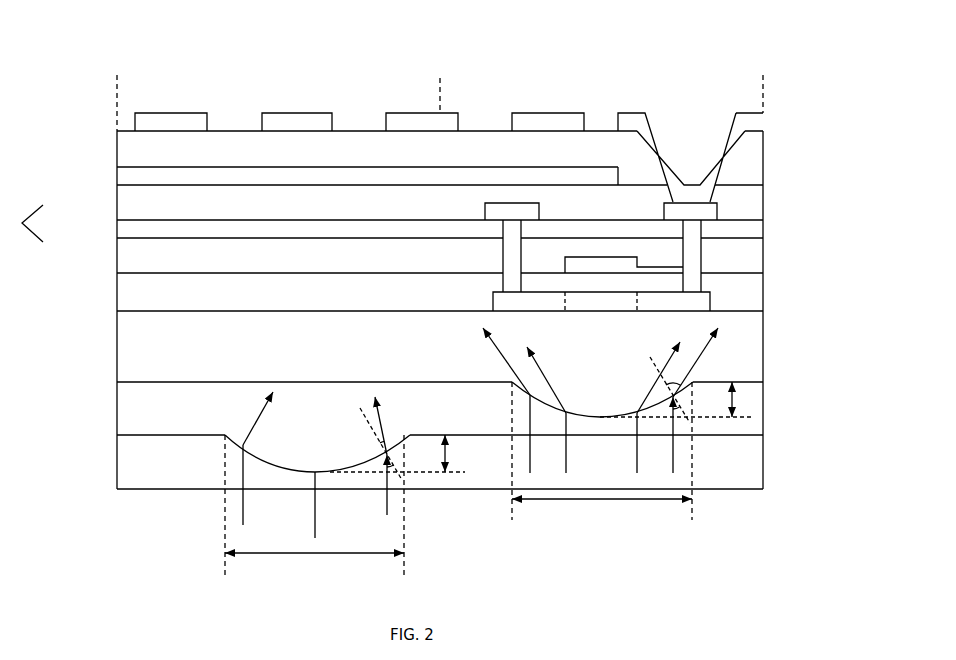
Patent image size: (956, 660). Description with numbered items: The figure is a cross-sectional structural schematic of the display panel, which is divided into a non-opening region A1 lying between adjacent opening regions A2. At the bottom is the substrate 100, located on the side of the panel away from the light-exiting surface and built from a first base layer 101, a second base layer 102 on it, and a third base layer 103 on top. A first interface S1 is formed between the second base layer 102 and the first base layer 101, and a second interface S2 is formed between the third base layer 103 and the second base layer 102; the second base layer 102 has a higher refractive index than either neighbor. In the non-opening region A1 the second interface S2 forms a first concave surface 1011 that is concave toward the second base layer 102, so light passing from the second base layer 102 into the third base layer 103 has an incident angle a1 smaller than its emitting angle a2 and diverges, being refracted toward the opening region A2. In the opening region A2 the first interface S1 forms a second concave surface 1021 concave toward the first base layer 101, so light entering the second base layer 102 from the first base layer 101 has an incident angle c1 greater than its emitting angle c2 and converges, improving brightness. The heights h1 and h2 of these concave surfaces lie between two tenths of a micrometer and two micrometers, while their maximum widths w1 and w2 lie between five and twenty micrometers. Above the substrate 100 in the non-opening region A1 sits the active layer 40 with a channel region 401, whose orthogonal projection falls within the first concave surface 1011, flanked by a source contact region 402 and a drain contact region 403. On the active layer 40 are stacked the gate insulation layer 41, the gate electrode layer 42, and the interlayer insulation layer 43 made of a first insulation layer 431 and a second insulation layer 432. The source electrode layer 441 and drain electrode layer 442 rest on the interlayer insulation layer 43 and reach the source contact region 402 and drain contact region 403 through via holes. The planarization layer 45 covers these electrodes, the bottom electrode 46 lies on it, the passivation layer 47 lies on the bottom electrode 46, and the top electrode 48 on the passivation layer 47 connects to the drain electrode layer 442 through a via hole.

The substrate 100 is at (856, 333).
The first base layer 101 is at (763, 457).
The second base layer 102 is at (763, 410).
The third base layer 103 is at (763, 363).
The first concave surface 1011 is at (600, 417).
The second concave surface 1021 is at (263, 462).
The first interface S1 is at (117, 435).
The second interface S2 is at (117, 382).
The active layer 40 is at (710, 303).
The channel region 401 is at (610, 305).
The source contact region 402 is at (540, 305).
The drain contact region 403 is at (668, 305).
The gate insulation layer 41 is at (117, 298).
The gate electrode layer 42 is at (687, 267).
The interlayer insulation layer 43 is at (21, 223).
The first insulation layer 431 is at (117, 260).
The second insulation layer 432 is at (117, 228).
The source electrode layer 441 is at (512, 203).
The drain electrode layer 442 is at (718, 213).
The planarization layer 45 is at (117, 197).
The bottom electrode 46 is at (117, 172).
The passivation layer 47 is at (117, 142).
The top electrode 48 is at (763, 121).
The non-opening region A1 is at (763, 87).
The opening region A2 is at (440, 87).
The maximum width of the first concave surface w1 is at (602, 451).
The maximum width of the second concave surface w2 is at (314, 506).
The height of the first concave surface h1 is at (678, 399).
The height of the second concave surface h2 is at (400, 453).
The incident angle a1 is at (682, 423).
The emitting angle a2 is at (670, 390).
The incident angle c1 is at (396, 478).
The emitting angle c2 is at (376, 436).